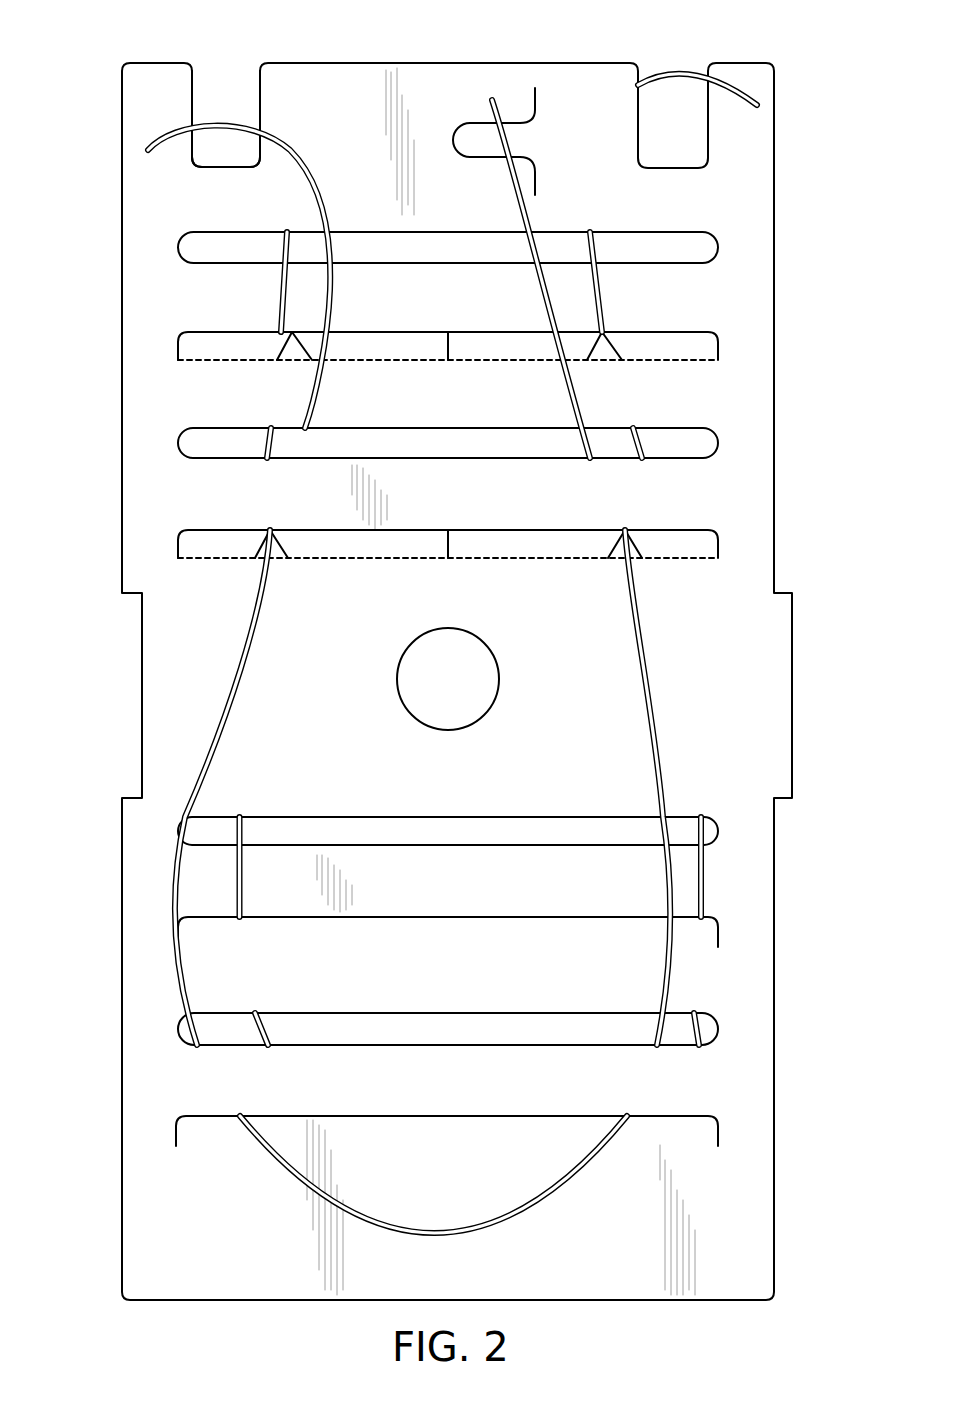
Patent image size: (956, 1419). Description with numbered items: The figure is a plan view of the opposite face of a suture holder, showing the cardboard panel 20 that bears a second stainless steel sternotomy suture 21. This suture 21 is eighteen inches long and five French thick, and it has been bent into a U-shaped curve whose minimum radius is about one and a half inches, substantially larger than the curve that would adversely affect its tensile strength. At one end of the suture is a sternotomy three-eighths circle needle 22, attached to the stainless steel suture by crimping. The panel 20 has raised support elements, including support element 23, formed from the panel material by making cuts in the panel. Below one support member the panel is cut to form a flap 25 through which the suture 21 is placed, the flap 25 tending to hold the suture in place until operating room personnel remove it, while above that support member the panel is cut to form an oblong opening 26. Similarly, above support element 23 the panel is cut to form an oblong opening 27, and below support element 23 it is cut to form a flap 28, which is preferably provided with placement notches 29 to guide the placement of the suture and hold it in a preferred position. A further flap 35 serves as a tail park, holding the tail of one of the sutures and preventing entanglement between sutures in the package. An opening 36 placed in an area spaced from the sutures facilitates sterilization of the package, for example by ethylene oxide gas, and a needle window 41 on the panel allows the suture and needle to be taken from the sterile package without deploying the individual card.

The cardboard panel 20 is at (655, 1090).
The stainless steel sternotomy suture 21 is at (657, 723).
The sternotomy needle 22 is at (290, 150).
The raised support element 23 is at (686, 491).
The flap 25 is at (718, 1128).
The oblong opening 26 is at (713, 1020).
The oblong opening 27 is at (713, 430).
The flap 28 is at (662, 556).
The placement notches 29 is at (270, 530).
The flap 35 is at (527, 140).
The opening 36 is at (498, 680).
The needle window 41 is at (228, 170).